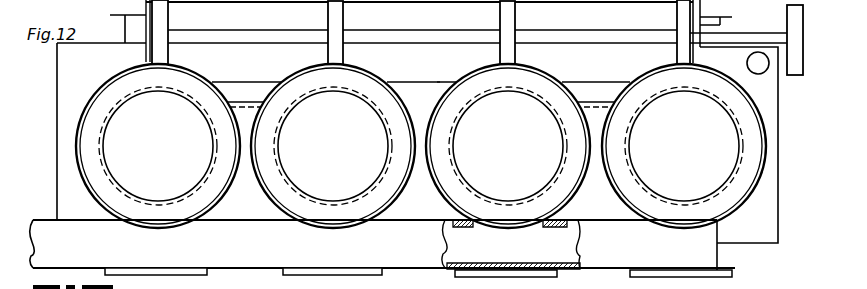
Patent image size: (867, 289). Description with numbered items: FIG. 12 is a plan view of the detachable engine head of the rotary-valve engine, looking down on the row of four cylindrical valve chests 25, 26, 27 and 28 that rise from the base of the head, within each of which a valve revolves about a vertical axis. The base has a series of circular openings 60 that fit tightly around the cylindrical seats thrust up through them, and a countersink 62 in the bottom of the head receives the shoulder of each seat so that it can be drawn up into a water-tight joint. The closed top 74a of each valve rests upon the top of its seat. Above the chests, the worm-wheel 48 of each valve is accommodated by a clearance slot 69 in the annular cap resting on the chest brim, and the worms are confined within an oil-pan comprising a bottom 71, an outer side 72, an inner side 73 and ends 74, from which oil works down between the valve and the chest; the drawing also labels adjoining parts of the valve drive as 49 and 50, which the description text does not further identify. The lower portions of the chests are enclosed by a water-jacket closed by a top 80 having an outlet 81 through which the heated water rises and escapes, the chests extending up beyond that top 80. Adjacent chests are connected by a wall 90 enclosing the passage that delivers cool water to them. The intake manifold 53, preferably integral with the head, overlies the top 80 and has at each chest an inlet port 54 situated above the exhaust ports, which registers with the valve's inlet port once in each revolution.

The valve chest 25 is at (124, 207).
The valve chest 26 is at (333, 146).
The valve chest 27 is at (451, 173).
The valve chest 28 is at (707, 212).
The worm-wheel 48 is at (172, 14).
The support bar 49 is at (237, 31).
The end post 50 is at (797, 40).
The intake manifold 53 is at (382, 248).
The inlet port 54 is at (472, 226).
The circular opening 60 is at (206, 121).
The countersink 62 is at (471, 105).
The clearance slot 69 is at (344, 69).
The oil-pan bottom 71 is at (419, 14).
The oil-pan outer side 72 is at (626, 12).
The oil-pan inner side 73 is at (437, 82).
The oil-pan end 74 is at (700, 8).
The valve top 74a is at (107, 162).
The water-jacket top 80 is at (417, 129).
The water outlet 81 is at (758, 75).
The wall 90 is at (249, 104).